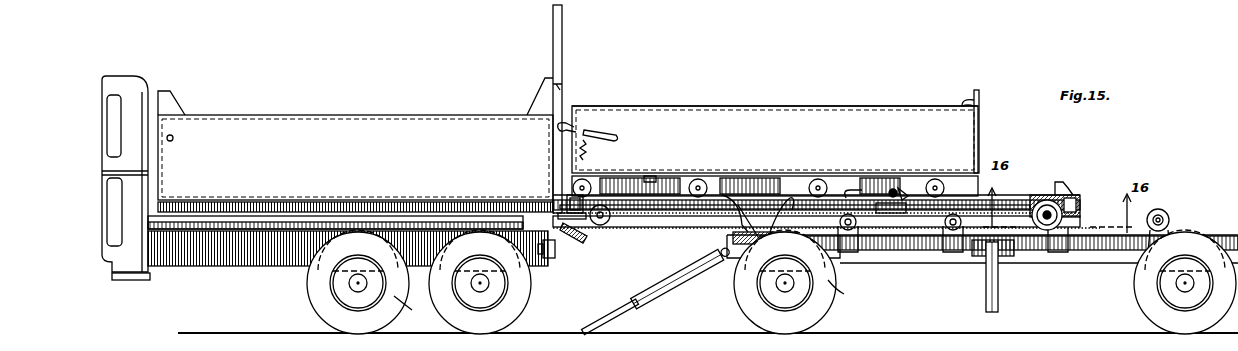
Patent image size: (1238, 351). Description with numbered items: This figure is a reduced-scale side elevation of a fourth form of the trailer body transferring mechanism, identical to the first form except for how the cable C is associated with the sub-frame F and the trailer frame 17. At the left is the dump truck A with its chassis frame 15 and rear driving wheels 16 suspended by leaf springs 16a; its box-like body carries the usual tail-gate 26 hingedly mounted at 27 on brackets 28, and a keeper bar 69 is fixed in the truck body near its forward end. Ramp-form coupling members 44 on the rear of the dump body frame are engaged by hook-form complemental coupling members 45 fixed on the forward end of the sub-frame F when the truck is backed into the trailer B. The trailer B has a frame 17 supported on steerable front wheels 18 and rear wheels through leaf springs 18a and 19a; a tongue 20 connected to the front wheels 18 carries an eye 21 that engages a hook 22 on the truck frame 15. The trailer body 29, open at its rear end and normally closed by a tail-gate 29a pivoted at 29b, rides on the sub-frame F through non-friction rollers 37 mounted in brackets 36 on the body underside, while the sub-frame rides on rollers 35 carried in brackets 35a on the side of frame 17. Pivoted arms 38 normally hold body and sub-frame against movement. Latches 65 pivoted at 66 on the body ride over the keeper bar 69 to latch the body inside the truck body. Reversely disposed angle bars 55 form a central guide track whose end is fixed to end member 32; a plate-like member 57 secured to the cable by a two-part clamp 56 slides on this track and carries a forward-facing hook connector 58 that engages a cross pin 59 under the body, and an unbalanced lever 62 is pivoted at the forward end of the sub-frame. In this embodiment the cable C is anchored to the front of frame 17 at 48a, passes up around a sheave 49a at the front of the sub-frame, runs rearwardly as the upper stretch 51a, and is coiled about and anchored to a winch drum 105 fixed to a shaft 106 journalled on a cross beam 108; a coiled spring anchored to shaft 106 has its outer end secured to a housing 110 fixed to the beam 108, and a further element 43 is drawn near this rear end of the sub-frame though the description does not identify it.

The dump truck A is at (326, 112).
The trailer B is at (778, 104).
The cable C is at (662, 228).
The sub-frame F is at (1017, 190).
The chassis frame 15 is at (228, 248).
The rear driving wheels 16 is at (410, 311).
The leaf springs 16a is at (318, 276).
The trailer frame 17 is at (1097, 255).
The steerable front wheels 18 is at (741, 302).
The leaf springs 18a is at (850, 292).
The leaf springs 19a is at (1156, 288).
The tongue 20 is at (648, 296).
The eye 21 is at (586, 328).
The hook 22 is at (548, 262).
The tail-gate 26 is at (562, 38).
The hinge 27 is at (566, 86).
The brackets 28 is at (540, 92).
The trailer body 29 is at (858, 108).
The tail-gate 29a is at (980, 118).
The pivot 29b is at (966, 98).
The end member 32 is at (567, 198).
The non-friction rollers 35 is at (1163, 210).
The brackets 35a is at (1168, 238).
The brackets 36 is at (650, 176).
The non-friction rollers 37 is at (688, 180).
The arms 38 is at (985, 292).
The stop 43 is at (1066, 188).
The coupling members 44 is at (580, 242).
The complemental coupling members 45 is at (567, 210).
The cable anchor 48a is at (786, 250).
The sheave 49a is at (602, 226).
The upper stretch 51a is at (716, 205).
The angle bars 55 is at (936, 214).
The two-part clamp 56 is at (888, 214).
The plate-like member 57 is at (852, 200).
The connector 58 is at (906, 192).
The cross pin 59 is at (893, 188).
The unbalanced lever 62 is at (742, 228).
The latches 65 is at (590, 126).
The pivot 66 is at (620, 134).
The keeper bar 69 is at (173, 135).
The winch drum 105 is at (1047, 208).
The shaft 106 is at (1047, 228).
The cross beam 108 is at (1076, 198).
The housing 110 is at (1080, 206).